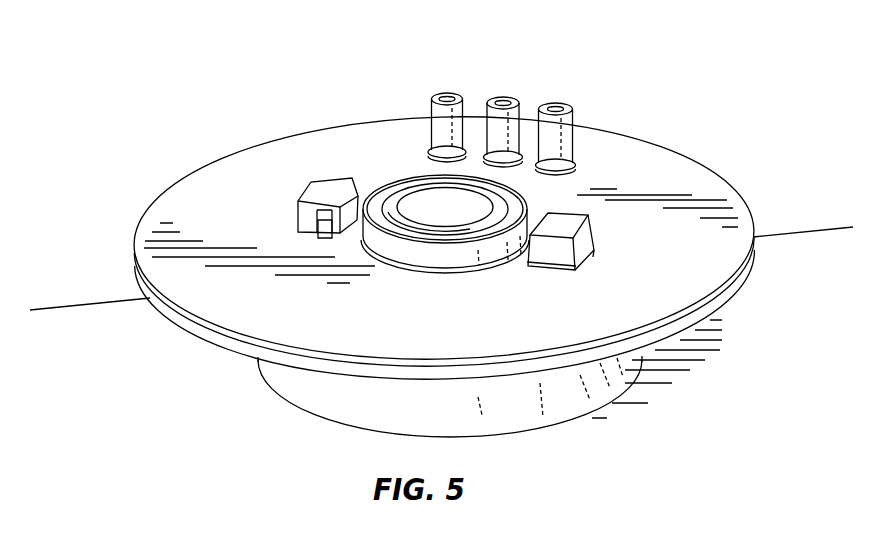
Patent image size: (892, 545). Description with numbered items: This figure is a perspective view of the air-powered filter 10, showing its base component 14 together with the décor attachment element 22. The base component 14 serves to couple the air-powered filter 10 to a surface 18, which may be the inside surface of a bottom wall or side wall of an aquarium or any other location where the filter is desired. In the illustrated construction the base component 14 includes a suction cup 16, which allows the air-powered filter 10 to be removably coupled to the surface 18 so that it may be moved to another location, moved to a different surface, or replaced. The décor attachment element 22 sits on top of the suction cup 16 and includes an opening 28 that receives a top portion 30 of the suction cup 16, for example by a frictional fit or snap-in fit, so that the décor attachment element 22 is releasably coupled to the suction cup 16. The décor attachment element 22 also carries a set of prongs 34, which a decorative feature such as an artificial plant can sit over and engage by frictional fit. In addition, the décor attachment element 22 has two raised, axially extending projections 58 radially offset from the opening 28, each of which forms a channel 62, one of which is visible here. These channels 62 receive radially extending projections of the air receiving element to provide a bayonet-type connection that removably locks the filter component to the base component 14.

The air-powered filter 10 is at (234, 90).
The base component 14 is at (200, 348).
The suction cup 16 is at (566, 426).
The surface 18 is at (721, 389).
The décor attachment element 22 is at (126, 255).
The opening 28 is at (510, 200).
The top portion 30 is at (423, 200).
The prongs 34 is at (555, 103).
The raised, axially extending projections 58 is at (303, 218).
The channel 62 is at (326, 240).